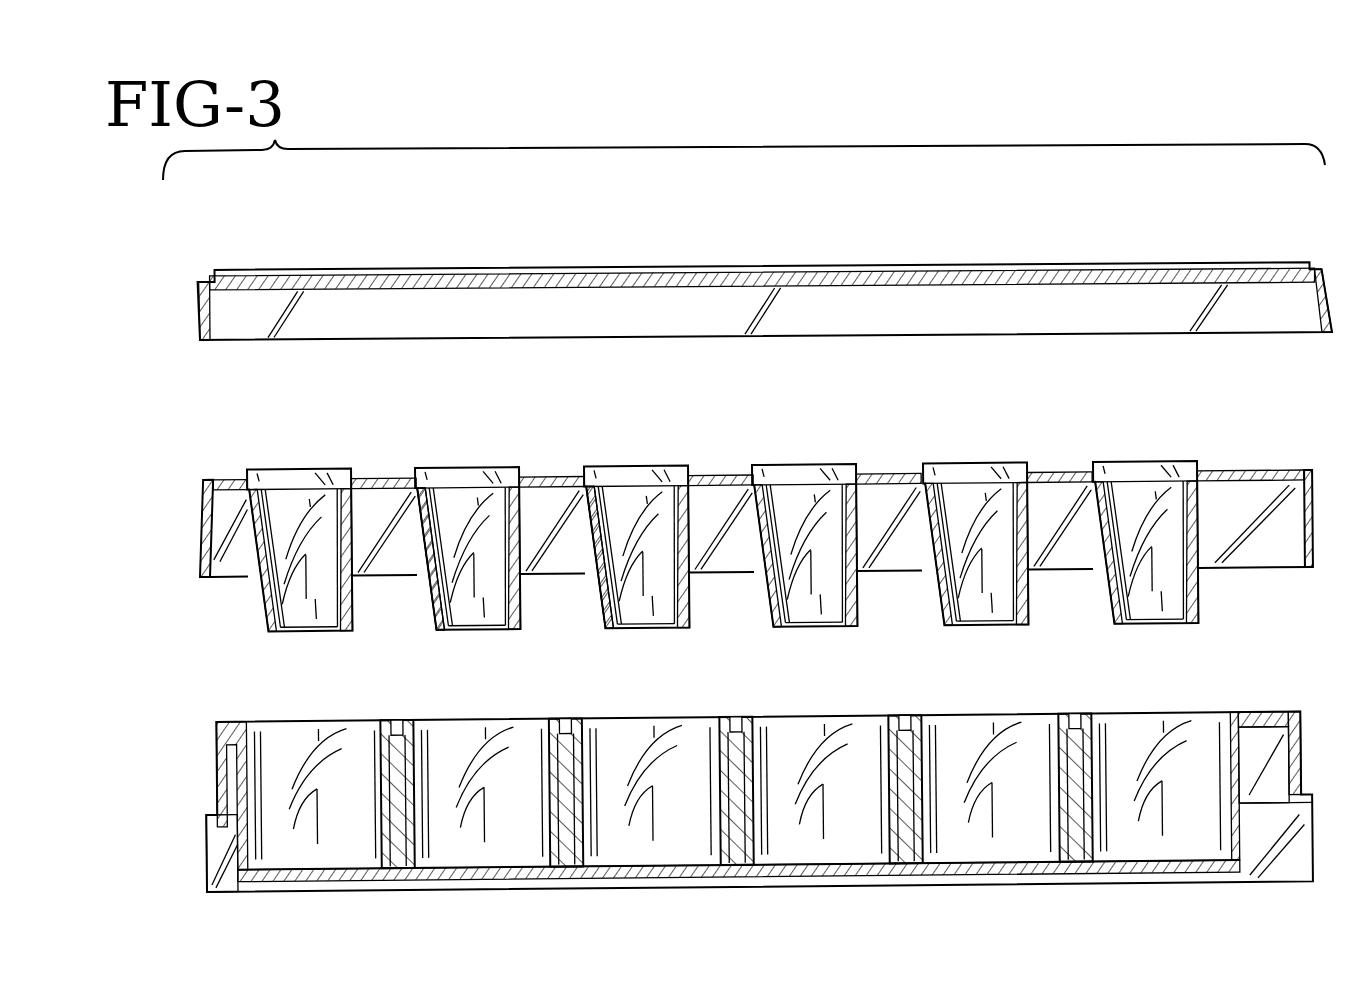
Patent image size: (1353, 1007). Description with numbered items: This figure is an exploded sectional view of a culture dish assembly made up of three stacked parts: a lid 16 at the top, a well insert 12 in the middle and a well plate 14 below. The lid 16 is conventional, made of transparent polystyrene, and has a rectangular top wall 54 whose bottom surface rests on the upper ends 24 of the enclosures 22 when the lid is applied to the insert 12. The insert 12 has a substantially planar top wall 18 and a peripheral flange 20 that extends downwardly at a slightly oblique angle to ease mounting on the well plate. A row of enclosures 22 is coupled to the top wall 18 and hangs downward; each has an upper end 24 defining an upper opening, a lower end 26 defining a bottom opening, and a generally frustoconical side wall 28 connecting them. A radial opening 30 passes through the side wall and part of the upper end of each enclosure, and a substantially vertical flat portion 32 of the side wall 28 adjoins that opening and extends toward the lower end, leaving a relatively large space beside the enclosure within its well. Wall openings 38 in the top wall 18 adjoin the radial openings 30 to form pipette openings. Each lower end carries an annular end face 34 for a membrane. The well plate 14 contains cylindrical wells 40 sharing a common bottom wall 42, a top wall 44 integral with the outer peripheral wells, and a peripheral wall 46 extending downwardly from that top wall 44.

The well insert 12 is at (716, 534).
The well plate 14 is at (717, 787).
The lid 16 is at (726, 267).
The top wall 18 is at (572, 480).
The peripheral flange 20 is at (200, 505).
The enclosures 22 is at (456, 510).
The upper end 24 is at (836, 478).
The lower end 26 is at (612, 615).
The side wall 28 is at (416, 524).
The radial opening 30 is at (668, 500).
The substantially vertical flat portion 32 is at (365, 540).
The annular end face 34 is at (957, 625).
The wall openings 38 is at (705, 485).
The wells 40 is at (460, 748).
The common bottom wall 42 is at (318, 888).
The top wall 44 is at (1275, 720).
The peripheral wall 46 is at (218, 795).
The rectangular top wall 54 is at (483, 276).